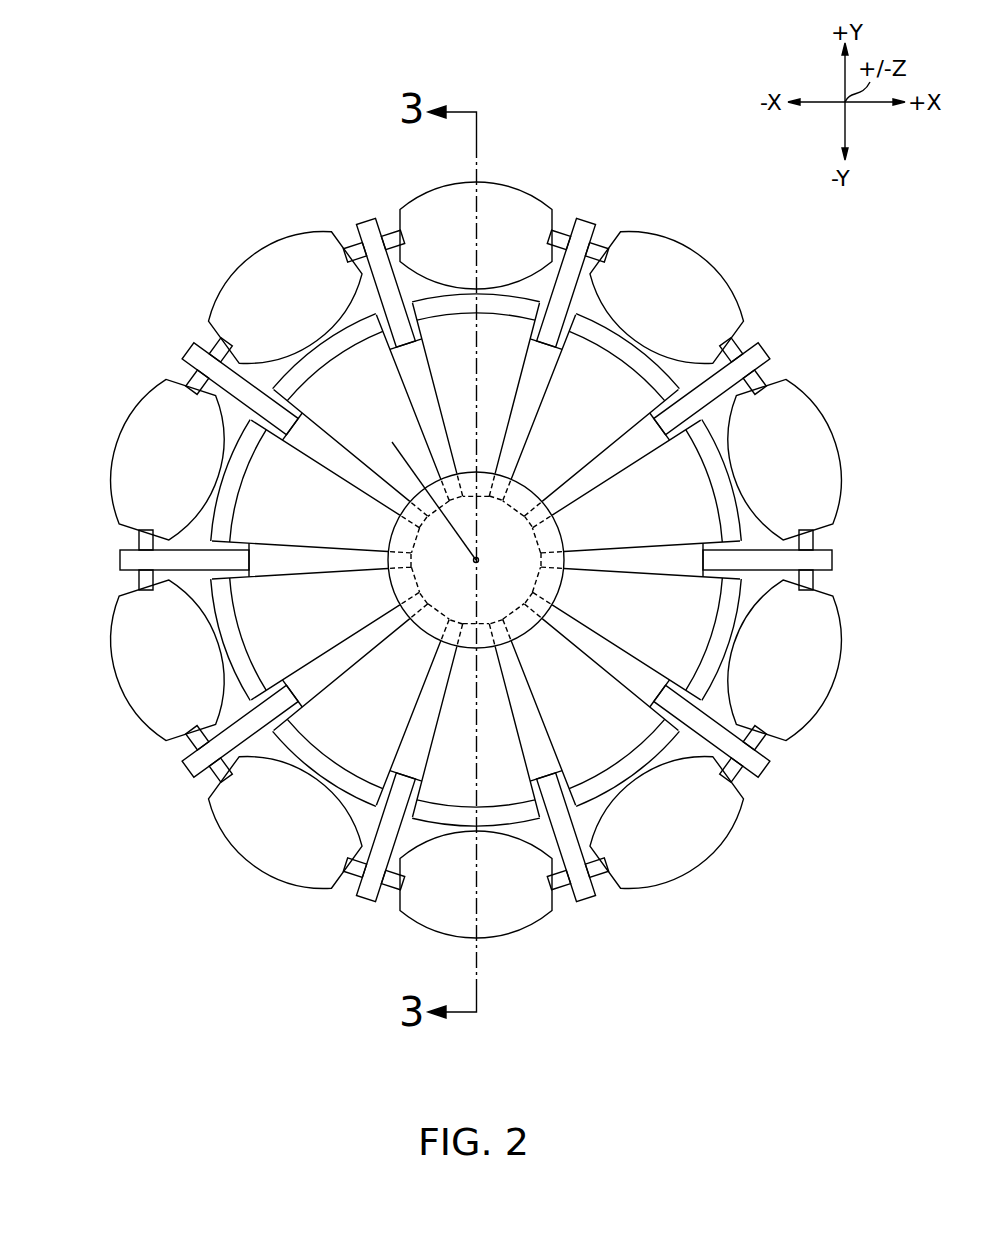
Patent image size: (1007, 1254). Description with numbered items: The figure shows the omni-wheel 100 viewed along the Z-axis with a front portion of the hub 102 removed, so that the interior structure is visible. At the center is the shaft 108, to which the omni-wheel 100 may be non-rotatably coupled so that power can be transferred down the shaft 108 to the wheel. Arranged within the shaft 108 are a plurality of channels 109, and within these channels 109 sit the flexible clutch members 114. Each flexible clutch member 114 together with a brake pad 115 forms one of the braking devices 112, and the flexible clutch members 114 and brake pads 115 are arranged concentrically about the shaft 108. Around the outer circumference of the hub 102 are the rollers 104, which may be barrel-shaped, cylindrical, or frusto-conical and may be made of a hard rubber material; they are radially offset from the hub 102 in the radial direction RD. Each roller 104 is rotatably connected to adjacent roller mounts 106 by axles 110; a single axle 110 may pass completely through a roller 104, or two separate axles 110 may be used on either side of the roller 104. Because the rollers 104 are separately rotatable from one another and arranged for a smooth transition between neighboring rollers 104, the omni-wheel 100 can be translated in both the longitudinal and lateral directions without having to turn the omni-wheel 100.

The omni-wheel 100 is at (120, 158).
The hub 102 is at (660, 556).
The rollers 104 is at (258, 250).
The roller mounts 106 is at (363, 226).
The shaft 108 is at (552, 622).
The channels 109 is at (447, 620).
The axles 110 is at (347, 248).
The braking devices 112 is at (341, 668).
The flexible clutch member 114 is at (276, 572).
The brake pad 115 is at (237, 684).
The radial direction RD is at (334, 364).